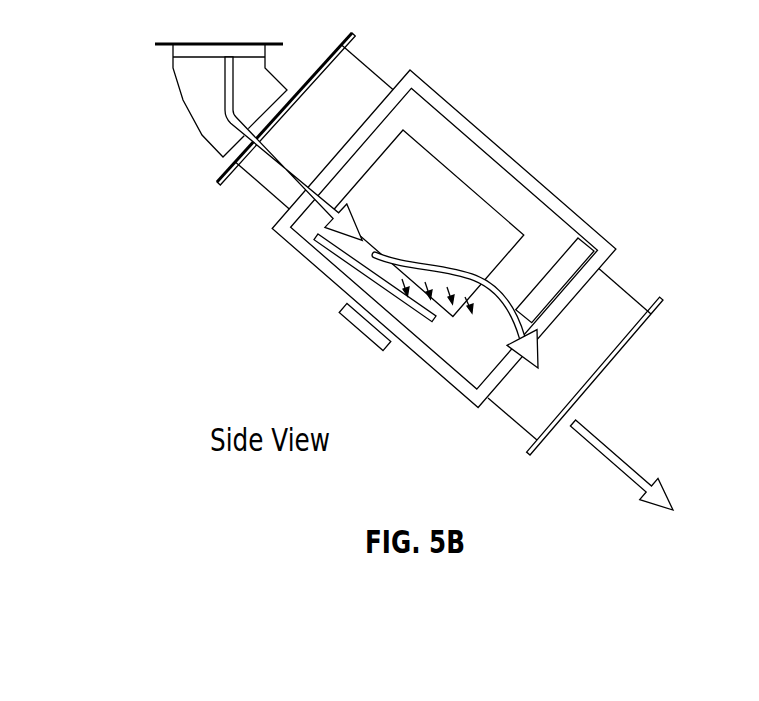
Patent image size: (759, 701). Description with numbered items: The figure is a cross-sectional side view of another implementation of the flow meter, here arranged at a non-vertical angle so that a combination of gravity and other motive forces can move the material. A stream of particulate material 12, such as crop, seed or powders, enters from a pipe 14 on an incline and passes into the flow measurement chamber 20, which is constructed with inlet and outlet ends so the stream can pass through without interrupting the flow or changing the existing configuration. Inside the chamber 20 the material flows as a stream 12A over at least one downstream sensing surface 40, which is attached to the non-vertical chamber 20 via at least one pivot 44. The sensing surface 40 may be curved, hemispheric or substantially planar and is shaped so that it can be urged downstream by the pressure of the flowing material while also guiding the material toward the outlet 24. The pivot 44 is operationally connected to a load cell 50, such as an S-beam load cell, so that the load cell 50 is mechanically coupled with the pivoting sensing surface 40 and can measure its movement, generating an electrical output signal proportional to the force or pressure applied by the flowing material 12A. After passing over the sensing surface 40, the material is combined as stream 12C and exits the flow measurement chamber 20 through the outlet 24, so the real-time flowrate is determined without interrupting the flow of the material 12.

The stream of particulate materials 12 is at (277, 177).
The stream of material flowing over the sensing surface 12A is at (352, 289).
The combined material stream 12C is at (613, 466).
The pipe 14 is at (185, 98).
The flow measurement chamber 20 is at (472, 133).
The outlet end 24 is at (557, 295).
The sensing surface 40 is at (473, 405).
The pivot 44 is at (398, 332).
The load cell 50 is at (356, 365).